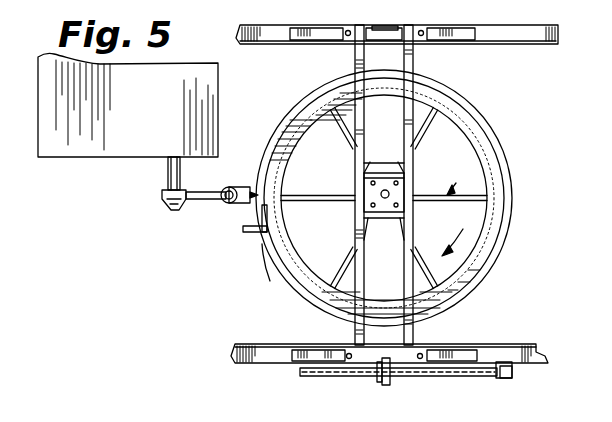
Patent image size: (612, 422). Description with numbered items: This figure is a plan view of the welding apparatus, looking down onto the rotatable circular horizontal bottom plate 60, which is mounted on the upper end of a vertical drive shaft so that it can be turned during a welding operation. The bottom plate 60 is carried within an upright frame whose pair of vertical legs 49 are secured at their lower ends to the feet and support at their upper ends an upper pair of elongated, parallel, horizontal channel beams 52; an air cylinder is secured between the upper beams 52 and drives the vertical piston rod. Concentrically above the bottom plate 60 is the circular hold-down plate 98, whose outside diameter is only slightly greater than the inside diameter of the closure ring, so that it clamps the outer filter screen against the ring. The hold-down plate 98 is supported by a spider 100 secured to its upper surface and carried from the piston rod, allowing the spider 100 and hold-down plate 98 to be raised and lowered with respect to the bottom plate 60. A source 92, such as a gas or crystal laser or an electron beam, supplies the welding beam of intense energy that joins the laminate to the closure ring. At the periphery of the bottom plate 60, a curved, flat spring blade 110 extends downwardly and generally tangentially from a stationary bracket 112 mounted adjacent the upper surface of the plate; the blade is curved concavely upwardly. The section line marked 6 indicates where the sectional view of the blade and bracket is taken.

The vertical leg 49 is at (386, 27).
The upper channel beam 52 is at (406, 250).
The bottom plate 60 is at (498, 136).
The source 92 is at (206, 192).
The hold-down plate 98 is at (462, 116).
The spider 100 is at (448, 211).
The spring blade 110 is at (268, 218).
The stationary bracket 112 is at (258, 262).
The section line 6- 6 is at (246, 249).